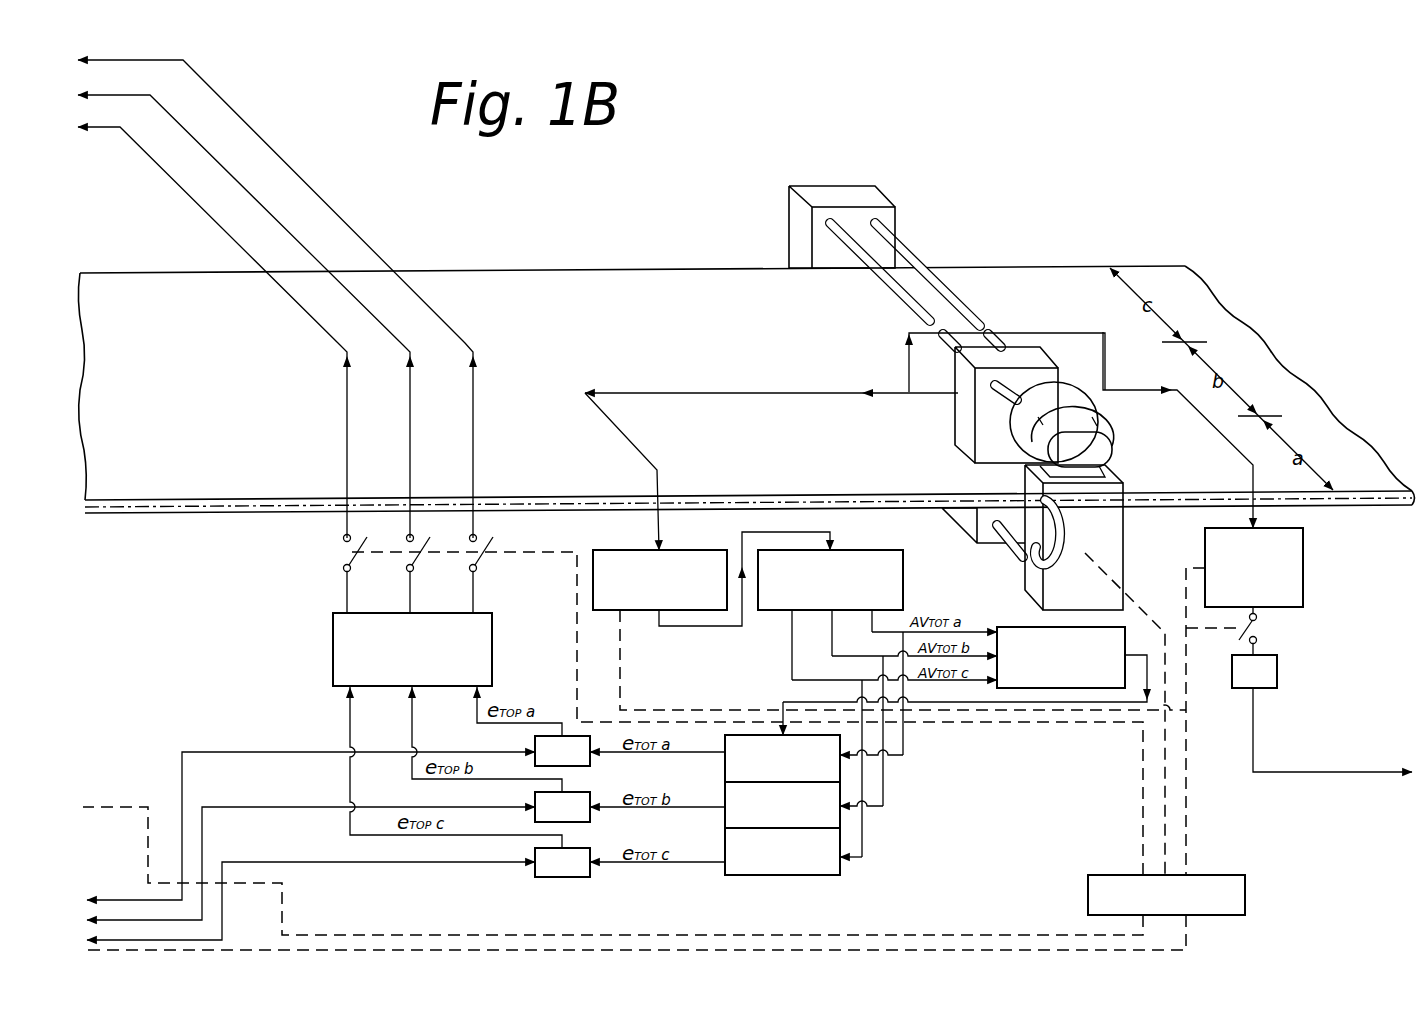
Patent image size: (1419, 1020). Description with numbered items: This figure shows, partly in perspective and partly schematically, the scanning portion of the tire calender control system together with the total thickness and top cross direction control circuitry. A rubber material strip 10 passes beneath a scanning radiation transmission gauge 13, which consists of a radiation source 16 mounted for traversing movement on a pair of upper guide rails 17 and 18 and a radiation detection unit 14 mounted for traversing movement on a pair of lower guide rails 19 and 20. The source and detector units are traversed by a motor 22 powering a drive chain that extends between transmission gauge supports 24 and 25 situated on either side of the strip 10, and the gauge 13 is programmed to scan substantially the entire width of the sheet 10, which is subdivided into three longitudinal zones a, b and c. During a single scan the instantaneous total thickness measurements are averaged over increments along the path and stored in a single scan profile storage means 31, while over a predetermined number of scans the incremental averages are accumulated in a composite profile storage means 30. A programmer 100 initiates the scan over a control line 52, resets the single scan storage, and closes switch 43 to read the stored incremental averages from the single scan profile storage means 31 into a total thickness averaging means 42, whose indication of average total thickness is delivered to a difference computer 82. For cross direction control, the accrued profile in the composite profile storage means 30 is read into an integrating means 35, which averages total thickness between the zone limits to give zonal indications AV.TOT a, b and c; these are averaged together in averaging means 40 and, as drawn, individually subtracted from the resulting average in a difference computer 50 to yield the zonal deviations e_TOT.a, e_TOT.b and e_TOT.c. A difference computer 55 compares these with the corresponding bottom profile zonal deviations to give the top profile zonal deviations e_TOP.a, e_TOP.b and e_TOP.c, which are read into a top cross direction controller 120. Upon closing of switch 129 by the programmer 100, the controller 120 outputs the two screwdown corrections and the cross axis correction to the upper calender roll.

The rubber material strip 10 is at (159, 498).
The scanning radiation transmission gauge 13 is at (1064, 363).
The radiation detection unit 14 is at (985, 541).
The radiation source 16 is at (960, 428).
The upper guide rail 17 is at (904, 302).
The upper guide rail 18 is at (948, 292).
The lower guide rail 19 is at (1010, 548).
The lower guide rail 20 is at (1050, 521).
The motor 22 is at (1110, 425).
The transmission gauge support 24 is at (838, 190).
The transmission gauge support 25 is at (1123, 545).
The composite profile storage means 30 is at (615, 550).
The single scan profile storage means 31 is at (1304, 565).
The integrating means 35 is at (852, 550).
The averaging means 40 is at (1015, 627).
The total thickness averaging means 42 is at (1278, 667).
The switch 43 is at (1262, 625).
The difference computer 50 is at (776, 826).
The control line 52 is at (1148, 612).
The difference computer 55 is at (556, 829).
The difference computer (output) 82 is at (1332, 754).
The programmer 100 is at (1146, 913).
The top cross direction controller 120 is at (397, 683).
The switch 129 is at (338, 554).